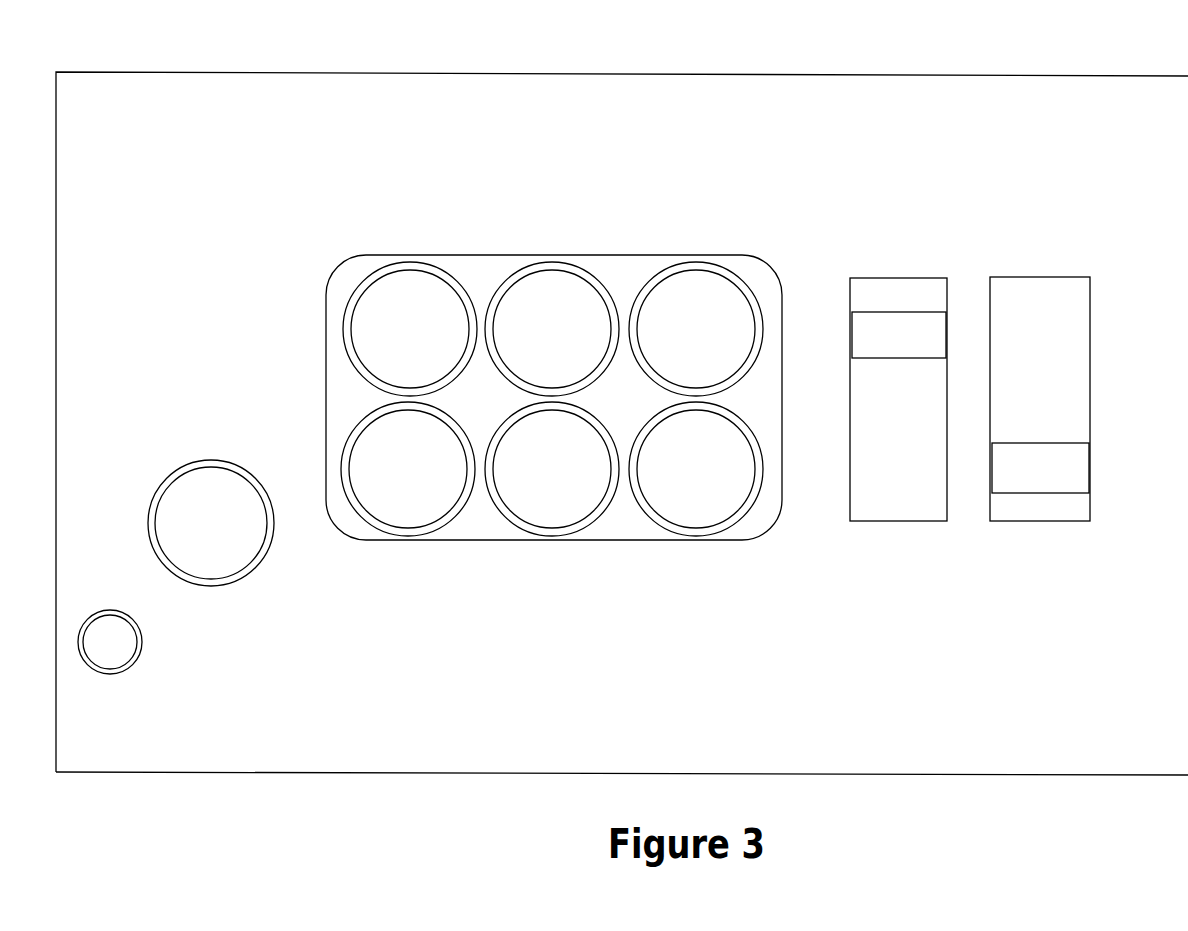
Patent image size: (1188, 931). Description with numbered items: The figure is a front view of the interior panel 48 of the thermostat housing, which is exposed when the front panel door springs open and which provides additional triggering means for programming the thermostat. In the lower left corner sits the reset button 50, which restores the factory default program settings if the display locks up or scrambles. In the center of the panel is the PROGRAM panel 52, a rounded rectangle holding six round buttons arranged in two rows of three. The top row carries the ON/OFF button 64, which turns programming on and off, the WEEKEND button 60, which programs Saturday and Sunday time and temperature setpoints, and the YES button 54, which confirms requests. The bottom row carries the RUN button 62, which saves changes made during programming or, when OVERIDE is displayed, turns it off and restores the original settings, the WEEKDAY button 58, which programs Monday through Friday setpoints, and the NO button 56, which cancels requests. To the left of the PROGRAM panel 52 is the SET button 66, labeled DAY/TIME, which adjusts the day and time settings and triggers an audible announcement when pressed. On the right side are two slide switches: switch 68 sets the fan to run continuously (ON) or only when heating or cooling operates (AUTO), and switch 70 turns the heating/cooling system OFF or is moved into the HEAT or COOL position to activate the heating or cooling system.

The interior panel 48 is at (775, 75).
The reset button 50 is at (135, 655).
The PROGRAM panel 52 is at (603, 260).
The YES button 54 is at (733, 267).
The NO button 56 is at (723, 505).
The WEEKDAY button 58 is at (568, 522).
The WEEKEND button 60 is at (515, 278).
The RUN button 62 is at (392, 513).
The ON/OFF button 64 is at (395, 265).
The SET (DAY/TIME) button 66 is at (235, 553).
The fan switch 68 is at (893, 278).
The heating/cooling system switch 70 is at (1058, 277).